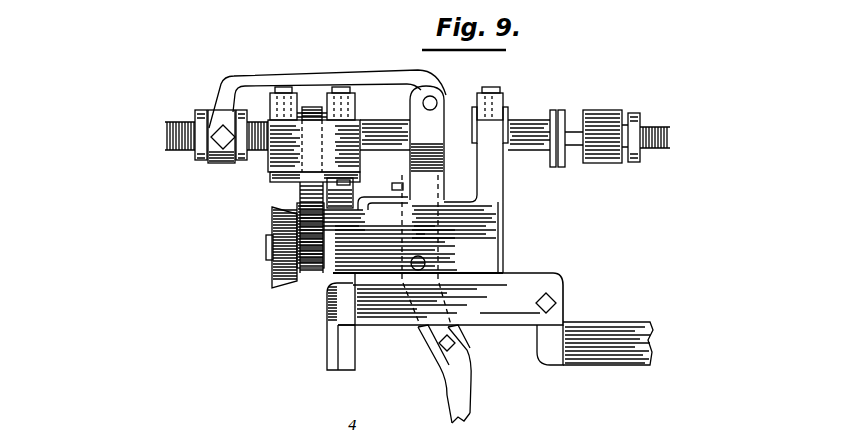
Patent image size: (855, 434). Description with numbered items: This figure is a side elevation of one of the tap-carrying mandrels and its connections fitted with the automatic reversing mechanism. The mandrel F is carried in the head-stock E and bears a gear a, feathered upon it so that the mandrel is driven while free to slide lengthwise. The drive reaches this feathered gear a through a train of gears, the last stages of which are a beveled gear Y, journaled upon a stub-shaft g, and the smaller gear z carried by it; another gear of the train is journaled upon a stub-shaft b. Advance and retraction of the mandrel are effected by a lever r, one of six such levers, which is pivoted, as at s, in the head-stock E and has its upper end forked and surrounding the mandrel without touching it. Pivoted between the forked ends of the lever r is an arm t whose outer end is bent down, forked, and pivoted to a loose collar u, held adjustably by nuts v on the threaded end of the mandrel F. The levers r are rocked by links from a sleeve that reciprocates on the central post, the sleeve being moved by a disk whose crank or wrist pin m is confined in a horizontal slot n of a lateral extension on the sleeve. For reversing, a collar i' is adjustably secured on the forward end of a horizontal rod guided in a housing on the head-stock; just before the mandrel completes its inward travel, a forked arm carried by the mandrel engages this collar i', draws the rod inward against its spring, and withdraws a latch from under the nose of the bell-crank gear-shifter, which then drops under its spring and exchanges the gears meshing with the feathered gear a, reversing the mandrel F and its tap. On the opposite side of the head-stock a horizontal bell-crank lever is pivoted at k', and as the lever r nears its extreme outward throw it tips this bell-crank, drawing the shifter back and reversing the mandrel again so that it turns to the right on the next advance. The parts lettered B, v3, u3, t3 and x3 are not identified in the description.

The mandrel F is at (518, 118).
The stub-shaft b is at (202, 160).
The loose collar u is at (223, 164).
The nuts v is at (245, 163).
The arm t is at (322, 80).
The horizontal slot n is at (300, 193).
The feathered gear a is at (310, 107).
The beveled gear Y is at (272, 213).
The stub-shaft g is at (268, 248).
The gear z is at (312, 270).
The crank or wrist pin m is at (342, 208).
The collar i' is at (383, 188).
The pivot k' is at (358, 220).
The head-stock E is at (493, 243).
The pivot s is at (426, 263).
The base B is at (612, 328).
The lever r is at (463, 378).
The collar v3 is at (560, 113).
The drum u3 is at (573, 145).
The collar t3 is at (636, 112).
The threaded end x3 is at (643, 113).